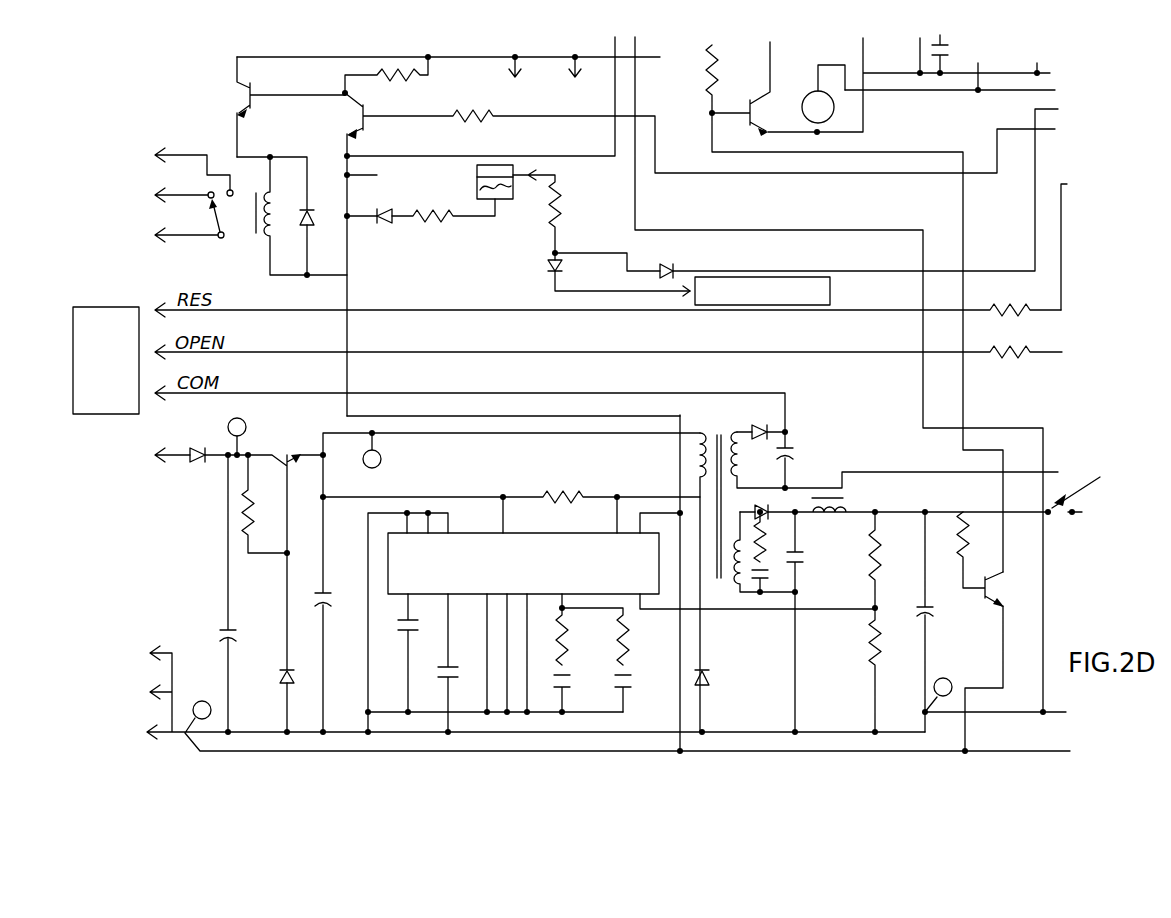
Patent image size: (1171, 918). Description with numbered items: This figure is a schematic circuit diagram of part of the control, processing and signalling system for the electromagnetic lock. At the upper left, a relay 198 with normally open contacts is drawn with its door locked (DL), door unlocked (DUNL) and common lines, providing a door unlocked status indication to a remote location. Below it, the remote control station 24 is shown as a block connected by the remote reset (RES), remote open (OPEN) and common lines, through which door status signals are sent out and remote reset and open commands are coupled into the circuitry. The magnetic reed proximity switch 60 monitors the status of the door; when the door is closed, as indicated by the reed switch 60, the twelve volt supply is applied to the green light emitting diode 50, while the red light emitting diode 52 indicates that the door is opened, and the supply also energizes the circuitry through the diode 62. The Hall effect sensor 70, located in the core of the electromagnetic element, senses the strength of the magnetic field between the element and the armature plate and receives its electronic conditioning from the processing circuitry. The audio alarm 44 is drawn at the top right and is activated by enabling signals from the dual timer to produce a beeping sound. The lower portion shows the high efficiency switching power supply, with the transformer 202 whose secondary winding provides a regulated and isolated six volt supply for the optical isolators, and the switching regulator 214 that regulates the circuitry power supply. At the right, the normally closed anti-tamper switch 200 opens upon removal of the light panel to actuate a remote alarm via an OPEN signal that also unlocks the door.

The relay 198 is at (242, 184).
The remote control station 24 is at (122, 318).
The magnetic reed proximity switch 60 is at (477, 170).
The light emitting diode 52 is at (386, 224).
The light emitting diode 50 is at (548, 266).
The diode 62 is at (665, 263).
The Hall effect sensor 70 is at (830, 292).
The audio alarm 44 is at (806, 95).
The transformer 202 is at (718, 432).
The switching regulator 214 is at (528, 543).
The anti-tamper switch 200 is at (1100, 466).